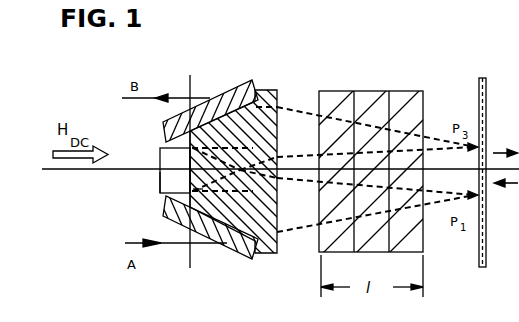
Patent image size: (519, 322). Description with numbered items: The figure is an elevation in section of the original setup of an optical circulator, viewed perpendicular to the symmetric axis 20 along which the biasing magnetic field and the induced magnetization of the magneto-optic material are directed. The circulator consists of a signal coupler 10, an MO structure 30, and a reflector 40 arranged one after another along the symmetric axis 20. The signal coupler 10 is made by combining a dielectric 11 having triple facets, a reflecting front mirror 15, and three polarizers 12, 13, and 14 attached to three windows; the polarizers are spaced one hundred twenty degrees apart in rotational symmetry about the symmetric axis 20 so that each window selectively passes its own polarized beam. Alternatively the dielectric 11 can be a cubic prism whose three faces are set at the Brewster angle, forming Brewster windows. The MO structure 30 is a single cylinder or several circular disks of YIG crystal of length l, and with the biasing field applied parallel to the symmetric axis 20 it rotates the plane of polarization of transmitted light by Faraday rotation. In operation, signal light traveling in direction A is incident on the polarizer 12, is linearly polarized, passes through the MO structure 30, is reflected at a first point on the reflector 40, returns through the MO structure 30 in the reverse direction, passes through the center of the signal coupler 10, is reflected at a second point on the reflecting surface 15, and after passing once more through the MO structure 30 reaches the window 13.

The signal coupler 10 is at (183, 268).
The dielectric 11 is at (271, 90).
The polarizer 12 is at (224, 258).
The polarizer 13 is at (238, 88).
The polarizer 14 is at (160, 150).
The reflecting front mirror 15 is at (160, 186).
The symmetric axis 20 is at (82, 170).
The MO structure 30 is at (366, 91).
The reflector 40 is at (482, 78).